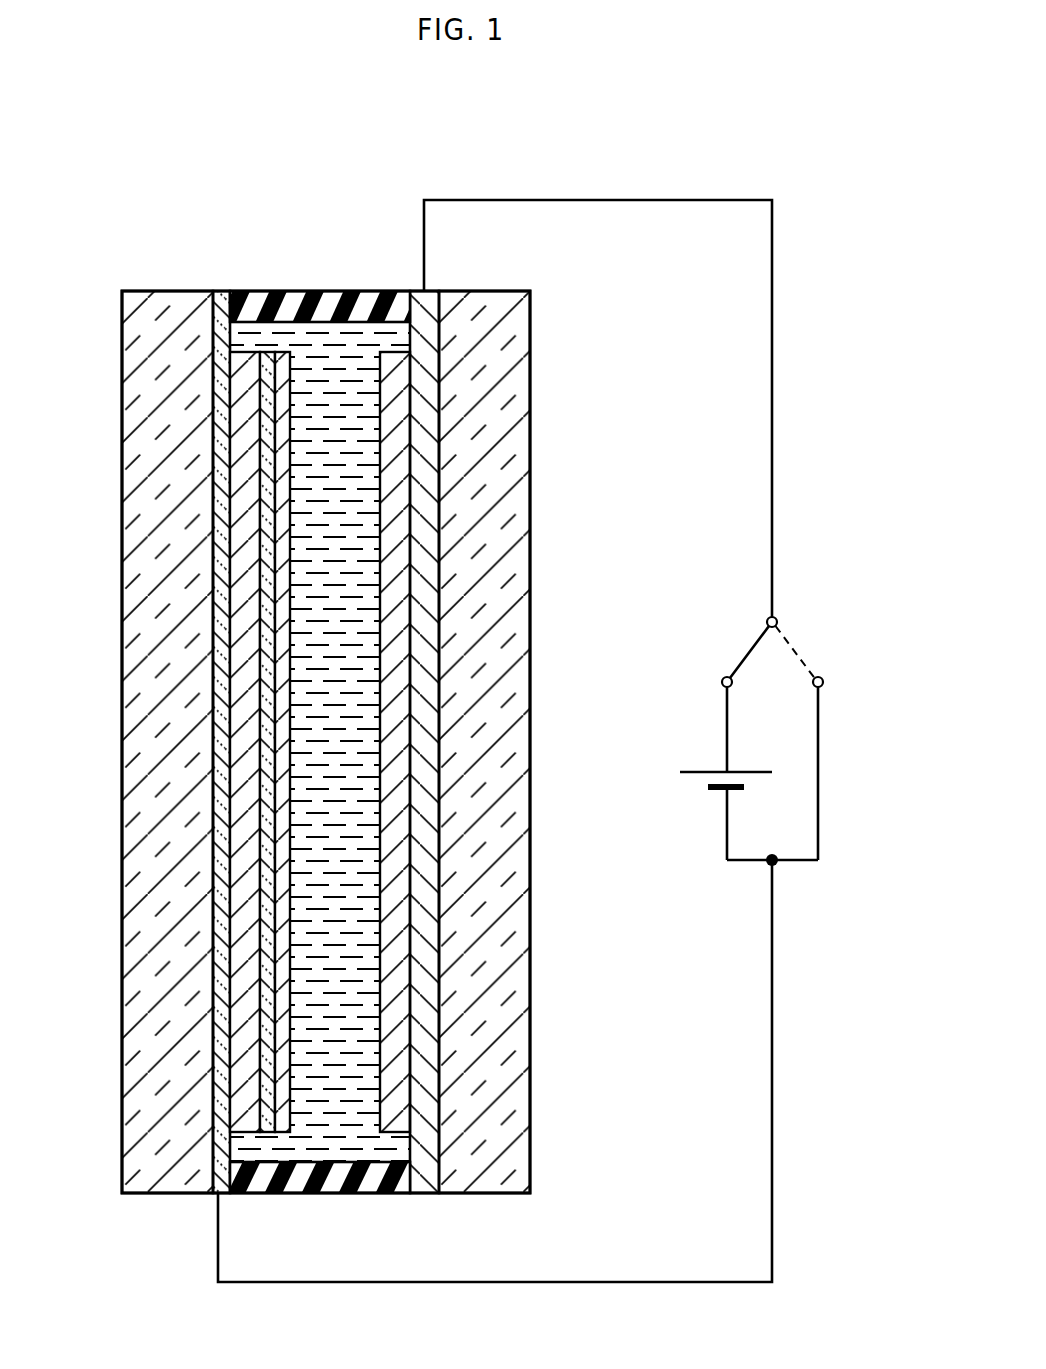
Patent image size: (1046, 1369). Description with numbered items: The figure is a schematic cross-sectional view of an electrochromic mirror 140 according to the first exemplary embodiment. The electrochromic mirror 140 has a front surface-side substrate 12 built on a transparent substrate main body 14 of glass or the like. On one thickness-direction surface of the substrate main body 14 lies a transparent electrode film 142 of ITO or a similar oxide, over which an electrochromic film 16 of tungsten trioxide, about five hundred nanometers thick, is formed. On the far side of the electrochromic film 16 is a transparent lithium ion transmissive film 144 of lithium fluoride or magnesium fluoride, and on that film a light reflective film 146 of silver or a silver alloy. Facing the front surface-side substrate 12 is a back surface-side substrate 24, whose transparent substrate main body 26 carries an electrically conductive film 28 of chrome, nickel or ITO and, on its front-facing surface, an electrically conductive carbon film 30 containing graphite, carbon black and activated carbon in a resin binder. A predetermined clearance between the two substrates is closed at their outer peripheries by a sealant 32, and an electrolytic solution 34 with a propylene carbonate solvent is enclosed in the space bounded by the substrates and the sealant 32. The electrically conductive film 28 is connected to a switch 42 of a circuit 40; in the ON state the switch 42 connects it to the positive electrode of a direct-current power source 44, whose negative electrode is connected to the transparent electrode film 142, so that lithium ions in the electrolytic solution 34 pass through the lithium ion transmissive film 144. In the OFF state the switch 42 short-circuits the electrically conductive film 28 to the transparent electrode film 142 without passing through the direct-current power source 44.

The electrochromic mirror 140 is at (245, 122).
The front surface-side substrate 12 is at (138, 274).
The substrate main body 14 is at (133, 360).
The transparent electrode film 142 is at (222, 432).
The electrochromic film 16 is at (237, 518).
The lithium ion transmissive film 144 is at (263, 617).
The light reflective film 146 is at (277, 712).
The back surface-side substrate 24 is at (551, 374).
The substrate main body 26 is at (523, 432).
The electrically conductive film 28 is at (430, 480).
The carbon film 30 is at (397, 550).
The sealant 32 is at (303, 288).
The electrolytic solution 34 is at (367, 1153).
The circuit 40 is at (805, 450).
The switch 42 is at (734, 647).
The direct-current power source 44 is at (700, 750).